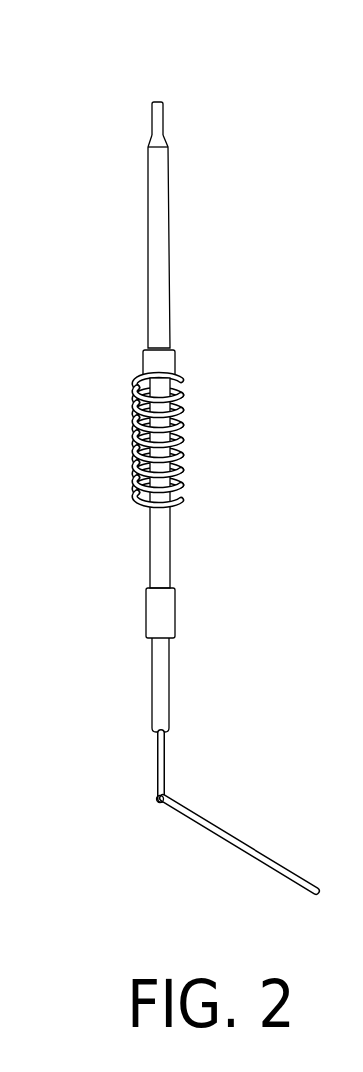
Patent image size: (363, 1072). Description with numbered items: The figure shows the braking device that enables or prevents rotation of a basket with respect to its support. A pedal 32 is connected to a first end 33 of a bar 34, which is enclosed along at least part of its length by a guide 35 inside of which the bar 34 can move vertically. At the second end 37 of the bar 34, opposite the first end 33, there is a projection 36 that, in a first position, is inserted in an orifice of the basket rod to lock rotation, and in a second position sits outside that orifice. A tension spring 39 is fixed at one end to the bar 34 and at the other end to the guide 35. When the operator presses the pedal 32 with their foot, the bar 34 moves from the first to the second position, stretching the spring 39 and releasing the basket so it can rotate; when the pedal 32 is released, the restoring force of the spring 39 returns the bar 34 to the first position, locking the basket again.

The pedal 32 is at (212, 835).
The first end 33 is at (157, 800).
The bar 34 is at (157, 750).
The guide 35 is at (158, 667).
The projection 36 is at (154, 115).
The second end 37 is at (172, 95).
The tension spring 39 is at (182, 433).